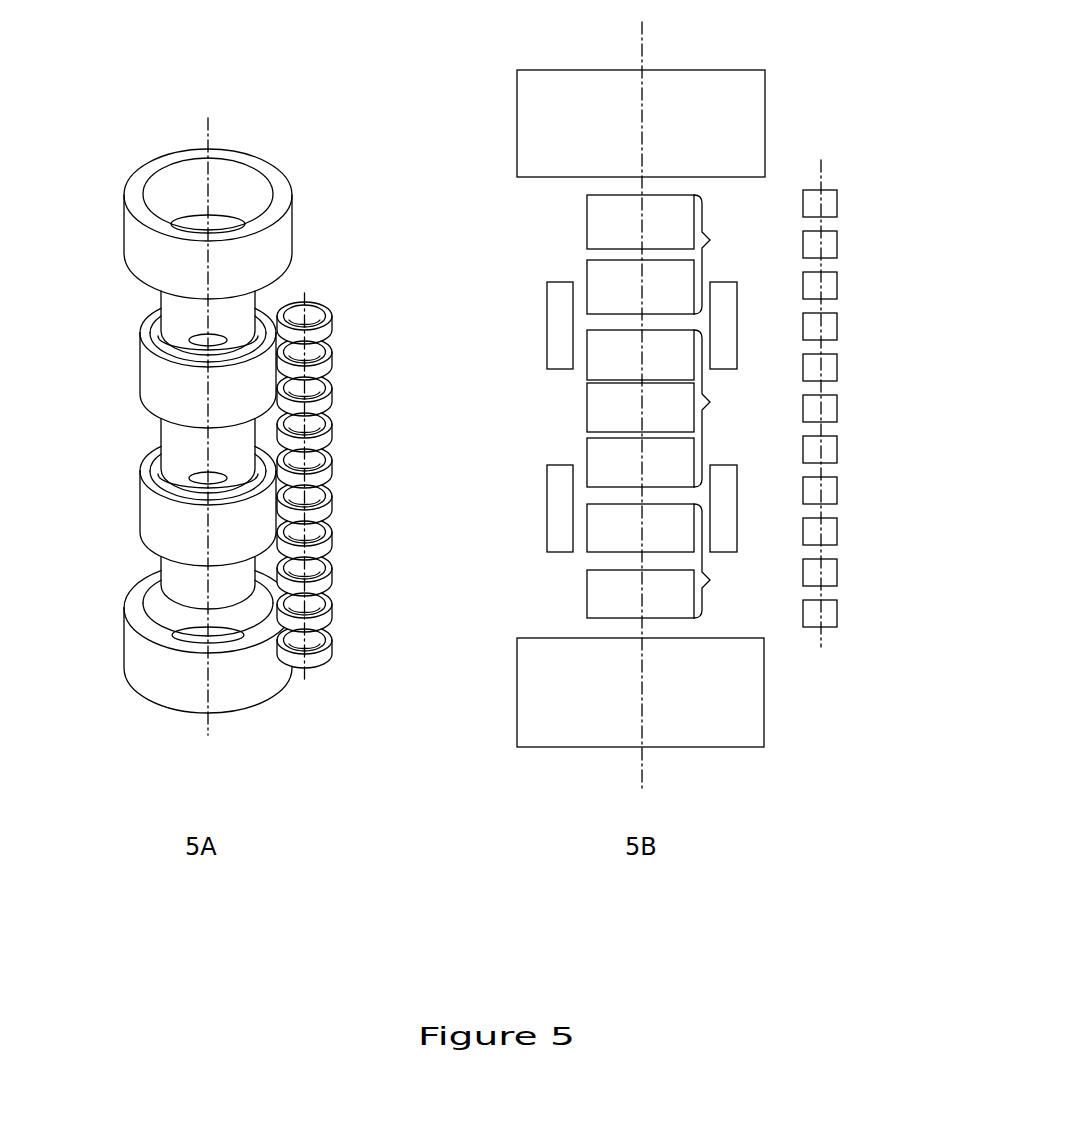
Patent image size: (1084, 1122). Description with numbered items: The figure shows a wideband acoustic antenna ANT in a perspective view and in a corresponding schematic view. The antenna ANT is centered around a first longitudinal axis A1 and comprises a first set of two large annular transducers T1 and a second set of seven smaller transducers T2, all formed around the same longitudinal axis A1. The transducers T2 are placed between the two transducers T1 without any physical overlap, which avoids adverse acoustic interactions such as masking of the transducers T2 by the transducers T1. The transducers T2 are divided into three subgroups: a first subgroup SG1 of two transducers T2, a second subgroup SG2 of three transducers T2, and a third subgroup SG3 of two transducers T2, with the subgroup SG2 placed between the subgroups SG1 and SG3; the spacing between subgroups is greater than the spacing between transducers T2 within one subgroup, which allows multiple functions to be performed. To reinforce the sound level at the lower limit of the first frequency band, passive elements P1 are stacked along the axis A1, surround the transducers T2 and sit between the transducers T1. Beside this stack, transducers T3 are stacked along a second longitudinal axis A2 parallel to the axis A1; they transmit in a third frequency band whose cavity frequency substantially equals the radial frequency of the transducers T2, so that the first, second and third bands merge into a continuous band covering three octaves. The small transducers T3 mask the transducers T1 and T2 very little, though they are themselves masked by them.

In FIG. 5A, the annular transducer of the first set T1 is at (143, 233).
In FIG. 5B, the annular transducer of the first set T1 is at (765, 100).
In FIG. 5A, the transducer of the second set T2 is at (173, 305).
In FIG. 5B, the transducer of the second set T2 is at (587, 225).
In FIG. 5A, the passive element P1 is at (157, 375).
In FIG. 5B, the passive element P1 is at (547, 325).
In FIG. 5A, the first longitudinal axis A1 is at (209, 126).
In FIG. 5B, the first longitudinal axis A1 is at (642, 47).
In FIG. 5A, the second longitudinal axis A2 is at (304, 297).
In FIG. 5B, the second longitudinal axis A2 is at (821, 165).
In FIG. 5A, the antenna ANT is at (374, 471).
In FIG. 5B, the antenna ANT is at (882, 457).
In FIG. 5B, the transducer of the third set T3 is at (837, 284).
In FIG. 5B, the first subgroup SG1 is at (731, 254).
In FIG. 5B, the second subgroup SG2 is at (731, 408).
In FIG. 5B, the third subgroup SG3 is at (731, 561).